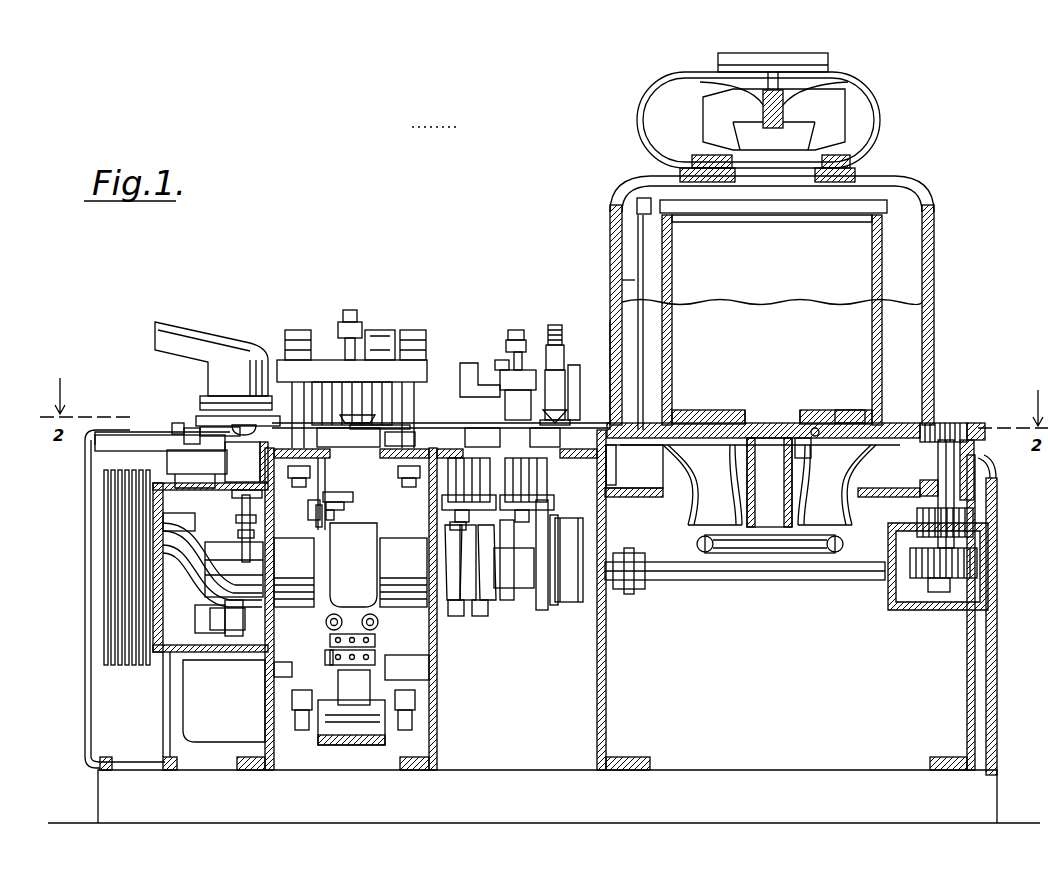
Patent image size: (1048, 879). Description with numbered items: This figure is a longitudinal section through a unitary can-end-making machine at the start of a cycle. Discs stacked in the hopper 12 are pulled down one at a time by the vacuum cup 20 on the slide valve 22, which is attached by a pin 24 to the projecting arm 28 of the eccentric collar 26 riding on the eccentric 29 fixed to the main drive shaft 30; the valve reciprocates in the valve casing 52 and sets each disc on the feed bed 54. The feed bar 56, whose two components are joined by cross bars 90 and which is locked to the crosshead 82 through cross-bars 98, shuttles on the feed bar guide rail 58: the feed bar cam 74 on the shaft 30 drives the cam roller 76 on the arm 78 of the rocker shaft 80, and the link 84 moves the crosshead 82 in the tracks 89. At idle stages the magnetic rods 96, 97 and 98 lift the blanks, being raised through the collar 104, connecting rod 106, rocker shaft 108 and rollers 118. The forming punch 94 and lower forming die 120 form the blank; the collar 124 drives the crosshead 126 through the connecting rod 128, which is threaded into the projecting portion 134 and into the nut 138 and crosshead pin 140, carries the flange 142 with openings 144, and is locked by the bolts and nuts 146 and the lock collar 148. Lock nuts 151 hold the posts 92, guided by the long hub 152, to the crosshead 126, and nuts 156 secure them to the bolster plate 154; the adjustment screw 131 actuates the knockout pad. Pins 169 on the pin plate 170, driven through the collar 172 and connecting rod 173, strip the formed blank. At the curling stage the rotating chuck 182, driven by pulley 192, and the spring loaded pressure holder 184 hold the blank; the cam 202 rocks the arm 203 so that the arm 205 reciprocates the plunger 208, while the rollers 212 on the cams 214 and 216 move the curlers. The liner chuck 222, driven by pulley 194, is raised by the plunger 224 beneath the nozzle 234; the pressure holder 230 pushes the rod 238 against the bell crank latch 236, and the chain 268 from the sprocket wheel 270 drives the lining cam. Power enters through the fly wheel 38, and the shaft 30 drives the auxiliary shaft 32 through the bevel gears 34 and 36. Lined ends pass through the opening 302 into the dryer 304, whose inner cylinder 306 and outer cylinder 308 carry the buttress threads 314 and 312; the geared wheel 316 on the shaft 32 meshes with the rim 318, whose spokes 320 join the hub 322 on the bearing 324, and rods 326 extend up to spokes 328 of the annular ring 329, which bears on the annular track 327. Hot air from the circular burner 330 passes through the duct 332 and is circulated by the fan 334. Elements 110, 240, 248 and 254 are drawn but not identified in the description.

The hopper 12 is at (192, 333).
The vacuum cup 20 is at (238, 436).
The slide valve 22 is at (240, 496).
The pin 24 is at (241, 510).
The eccentric collar 26 is at (240, 535).
The projecting arm 28 is at (240, 522).
The eccentric 29 is at (275, 568).
The main drive shaft 30 is at (238, 560).
The auxiliary shaft 32 is at (950, 468).
The bevel gear 34 is at (920, 585).
The bevel gear 36 is at (948, 570).
The fly wheel 38 is at (108, 606).
The valve casing 52 is at (246, 462).
The feed bed 54 is at (205, 426).
The feed bar 56 is at (176, 422).
The feed bar guide rail 58 is at (412, 427).
The feed bar cam 74 is at (168, 522).
The cam roller 76 is at (233, 612).
The arm 78 is at (225, 630).
The rocker shaft 80 is at (190, 625).
The crosshead 82 is at (156, 445).
The link 84 is at (190, 465).
The tracks 89 is at (104, 440).
The cross bars 90 is at (188, 427).
The posts 92 is at (416, 398).
The forming punch 94 is at (335, 406).
The rod 96 is at (300, 430).
The rod 97 is at (416, 437).
The rod 98 is at (570, 421).
The collar 104 is at (575, 602).
The connecting rod 106 is at (606, 520).
The rocker shaft 108 is at (312, 484).
The link 110 is at (310, 512).
The rollers 118 is at (312, 480).
The lower forming die 120 is at (362, 446).
The collar 124 is at (372, 551).
The crosshead 126 is at (432, 687).
The connecting rod 128 is at (325, 630).
The adjustment screw 131 is at (358, 314).
The projecting portion 134 is at (378, 608).
The nut 138 is at (365, 690).
The crosshead pin 140 is at (368, 740).
The flange 142 is at (378, 640).
The openings 144 is at (378, 652).
The bolts and nuts 146 is at (325, 620).
The lock collar 148 is at (324, 652).
The lock nuts 151 is at (292, 714).
The long hub 152 is at (268, 660).
The bolster plate 154 is at (318, 360).
The nuts 156 is at (405, 342).
The pins 169 is at (355, 496).
The pin plate 170 is at (346, 506).
The collar 172 is at (316, 520).
The connecting rod 173 is at (332, 515).
The rotating chuck 182 is at (487, 437).
The spring loaded pressure holder 184 is at (452, 410).
The pulley 192 is at (466, 500).
The pulley 194 is at (518, 484).
The cam 202 is at (508, 600).
The arm 203 is at (467, 562).
The arm 205 is at (462, 528).
The plunger 208 is at (462, 516).
The rollers 212 is at (470, 605).
The cam 214 is at (448, 566).
The cam 216 is at (490, 560).
The liner chuck 222 is at (547, 437).
The plunger 224 is at (514, 517).
The pressure holder 230 is at (514, 386).
The nozzle 234 is at (572, 407).
The bell crank latch 236 is at (507, 336).
The rod 238 is at (505, 341).
The lug 240 is at (500, 360).
The spring housing 248 is at (565, 358).
The spring 254 is at (563, 343).
The chain 268 is at (628, 561).
The sprocket wheel 270 is at (542, 610).
The opening 302 is at (565, 410).
The dryer 304 is at (608, 332).
The cylinder 306 is at (672, 355).
The cylinder 308 is at (937, 349).
The buttress thread 312 is at (620, 273).
The buttress thread 314 is at (672, 375).
The geared wheel 316 is at (985, 424).
The rim 318 is at (940, 422).
The spokes 320 is at (843, 408).
The hub 322 is at (816, 427).
The bearing 324 is at (805, 458).
The rod 326 is at (645, 340).
The annular track 327 is at (690, 226).
The spoke 328 is at (650, 200).
The annular ring 329 is at (690, 205).
The circular burner 330 is at (808, 568).
The duct 332 is at (695, 520).
The fan 334 is at (835, 112).